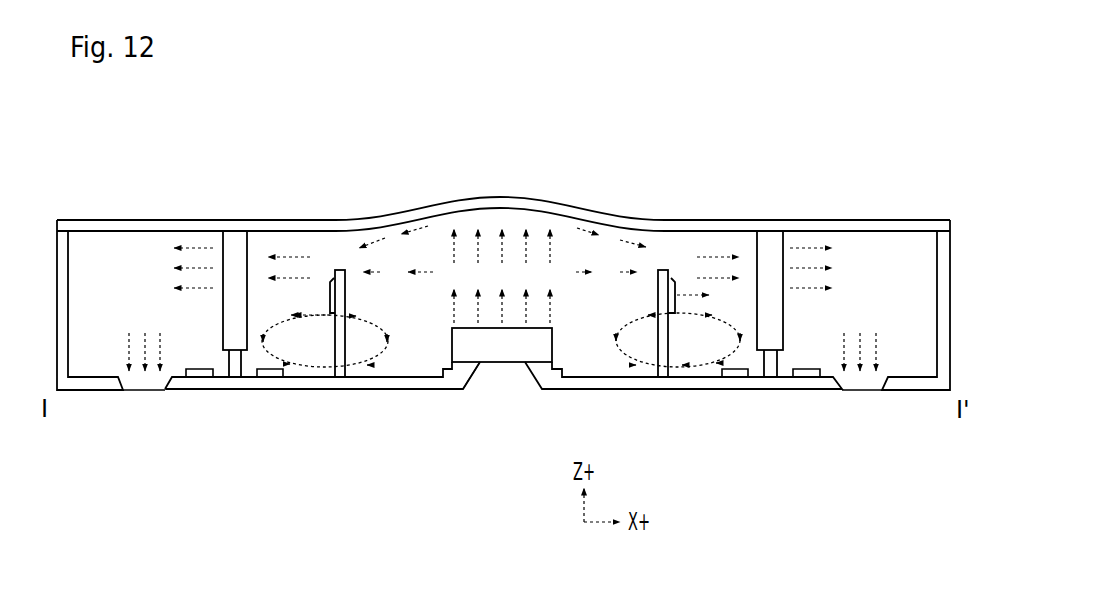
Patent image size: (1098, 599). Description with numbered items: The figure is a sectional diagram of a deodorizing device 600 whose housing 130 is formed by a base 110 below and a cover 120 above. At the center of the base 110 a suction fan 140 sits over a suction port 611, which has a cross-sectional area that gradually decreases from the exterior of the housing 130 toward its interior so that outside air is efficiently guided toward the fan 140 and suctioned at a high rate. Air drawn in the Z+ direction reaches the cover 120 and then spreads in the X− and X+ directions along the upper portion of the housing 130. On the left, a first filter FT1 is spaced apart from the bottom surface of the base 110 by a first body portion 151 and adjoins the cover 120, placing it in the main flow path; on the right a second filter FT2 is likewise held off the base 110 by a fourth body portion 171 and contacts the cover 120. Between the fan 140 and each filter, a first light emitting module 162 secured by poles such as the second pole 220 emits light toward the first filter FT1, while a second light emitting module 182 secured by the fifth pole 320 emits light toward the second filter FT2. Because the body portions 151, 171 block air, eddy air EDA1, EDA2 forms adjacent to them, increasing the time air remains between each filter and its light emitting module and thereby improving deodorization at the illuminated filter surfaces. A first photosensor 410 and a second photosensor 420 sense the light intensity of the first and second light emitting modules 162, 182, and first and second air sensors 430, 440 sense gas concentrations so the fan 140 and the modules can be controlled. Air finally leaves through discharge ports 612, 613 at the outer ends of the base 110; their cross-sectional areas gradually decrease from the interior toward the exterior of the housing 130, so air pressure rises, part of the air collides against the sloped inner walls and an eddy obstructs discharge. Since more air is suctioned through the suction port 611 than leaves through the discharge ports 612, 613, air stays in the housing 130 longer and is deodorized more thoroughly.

The deodorizing device 600 is at (108, 167).
The housing 130 is at (1021, 231).
The cover 120 is at (950, 222).
The base 110 is at (950, 295).
The suction fan 140 is at (466, 352).
The first body portion 151 is at (229, 379).
The fourth body portion 171 is at (771, 379).
The first light emitting module 162 is at (330, 312).
The second light emitting module 182 is at (676, 312).
The second pole 220 is at (343, 270).
The fifth pole 320 is at (660, 270).
The first photosensor 410 is at (270, 379).
The second photosensor 420 is at (735, 379).
The first air sensor 430 is at (203, 379).
The second air sensor 440 is at (805, 379).
The suction port 611 is at (476, 386).
The discharge port 612 is at (159, 391).
The discharge port 613 is at (846, 391).
The first filter FT1 is at (236, 243).
The second filter FT2 is at (770, 243).
The eddy air EDA1 is at (303, 343).
The eddy air EDA2 is at (701, 343).